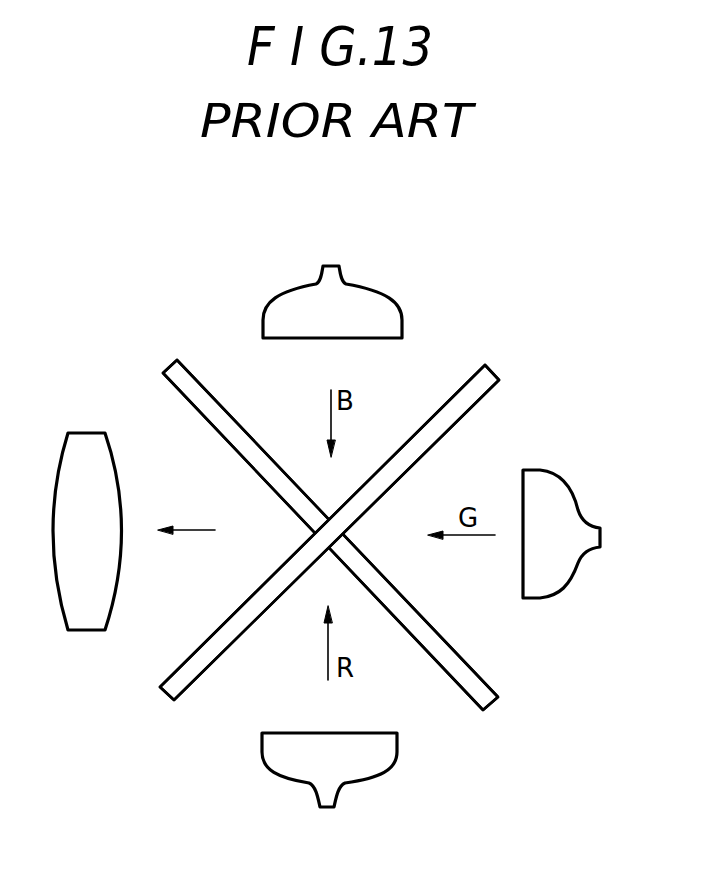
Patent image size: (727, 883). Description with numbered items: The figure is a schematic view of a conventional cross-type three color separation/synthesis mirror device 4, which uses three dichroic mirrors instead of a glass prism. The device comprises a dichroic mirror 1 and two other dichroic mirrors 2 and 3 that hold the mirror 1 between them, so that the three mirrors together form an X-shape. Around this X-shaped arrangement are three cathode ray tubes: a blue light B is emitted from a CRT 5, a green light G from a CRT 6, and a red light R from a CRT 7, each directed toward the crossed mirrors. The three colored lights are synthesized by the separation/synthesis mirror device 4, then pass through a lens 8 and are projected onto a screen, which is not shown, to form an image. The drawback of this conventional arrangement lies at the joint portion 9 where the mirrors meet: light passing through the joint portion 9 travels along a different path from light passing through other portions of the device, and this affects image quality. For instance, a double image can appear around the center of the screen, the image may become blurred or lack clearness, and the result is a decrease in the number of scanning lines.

The dichroic mirror 1 is at (490, 393).
The dichroic mirror 2 is at (232, 417).
The dichroic mirror 3 is at (447, 638).
The cross-type three color separation/synthesis mirror device 4 is at (461, 736).
The CRT 5 is at (343, 282).
The CRT 6 is at (565, 583).
The CRT 7 is at (365, 775).
The lens 8 is at (90, 632).
The joint portion 9 is at (290, 536).